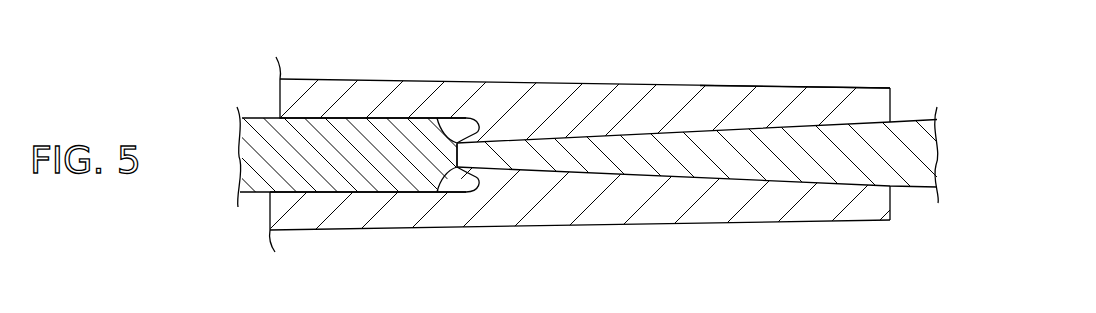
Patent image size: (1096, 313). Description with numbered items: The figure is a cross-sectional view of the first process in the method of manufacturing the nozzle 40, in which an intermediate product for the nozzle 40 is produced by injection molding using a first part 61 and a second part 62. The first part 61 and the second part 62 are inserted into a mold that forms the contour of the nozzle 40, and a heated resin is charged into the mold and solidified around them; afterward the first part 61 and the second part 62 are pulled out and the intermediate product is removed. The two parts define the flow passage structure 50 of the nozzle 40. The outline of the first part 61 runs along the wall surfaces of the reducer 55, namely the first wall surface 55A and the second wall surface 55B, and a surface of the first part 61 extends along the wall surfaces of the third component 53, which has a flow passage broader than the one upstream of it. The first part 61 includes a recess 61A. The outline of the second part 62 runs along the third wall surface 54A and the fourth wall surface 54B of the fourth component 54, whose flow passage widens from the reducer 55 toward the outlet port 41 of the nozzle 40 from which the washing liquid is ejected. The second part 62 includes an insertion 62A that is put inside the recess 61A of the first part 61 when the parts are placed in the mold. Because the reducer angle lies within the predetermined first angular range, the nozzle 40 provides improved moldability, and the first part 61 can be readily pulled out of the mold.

The nozzle 40 is at (886, 59).
The outlet port 41 is at (834, 88).
The flow passage structure 50 is at (583, 97).
The third component 53 is at (318, 79).
The fourth component 54 is at (769, 91).
The third wall surface 54A is at (696, 128).
The fourth wall surface 54B is at (773, 182).
The reducer 55 is at (477, 118).
The first wall surface 55A is at (475, 128).
The second wall surface 55B is at (483, 188).
The first part 61 is at (242, 108).
The recess 61A is at (438, 118).
The second part 62 is at (918, 190).
The insertion 62A is at (460, 175).